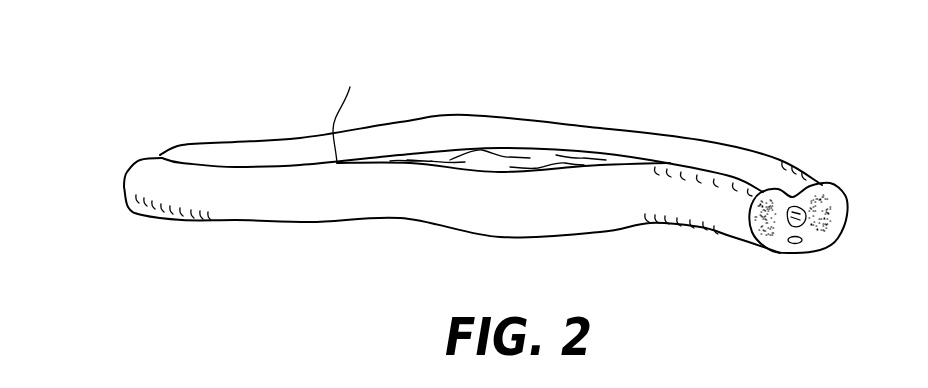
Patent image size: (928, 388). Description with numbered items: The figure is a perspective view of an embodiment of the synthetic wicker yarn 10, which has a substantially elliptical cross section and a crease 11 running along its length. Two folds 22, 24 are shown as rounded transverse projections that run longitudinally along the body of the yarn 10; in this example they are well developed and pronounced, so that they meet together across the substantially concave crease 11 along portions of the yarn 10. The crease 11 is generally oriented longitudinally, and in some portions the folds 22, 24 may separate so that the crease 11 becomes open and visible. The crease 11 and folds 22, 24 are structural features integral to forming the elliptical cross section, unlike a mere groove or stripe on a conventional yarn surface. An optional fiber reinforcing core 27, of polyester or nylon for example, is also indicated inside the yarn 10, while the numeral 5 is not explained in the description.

The yarn 10 is at (832, 122).
The crease 11 is at (850, 275).
The channel with textured lining 5 is at (504, 216).
The fold 24 is at (837, 197).
The fold 22 is at (760, 210).
The fiber reinforcing core 27 is at (791, 244).